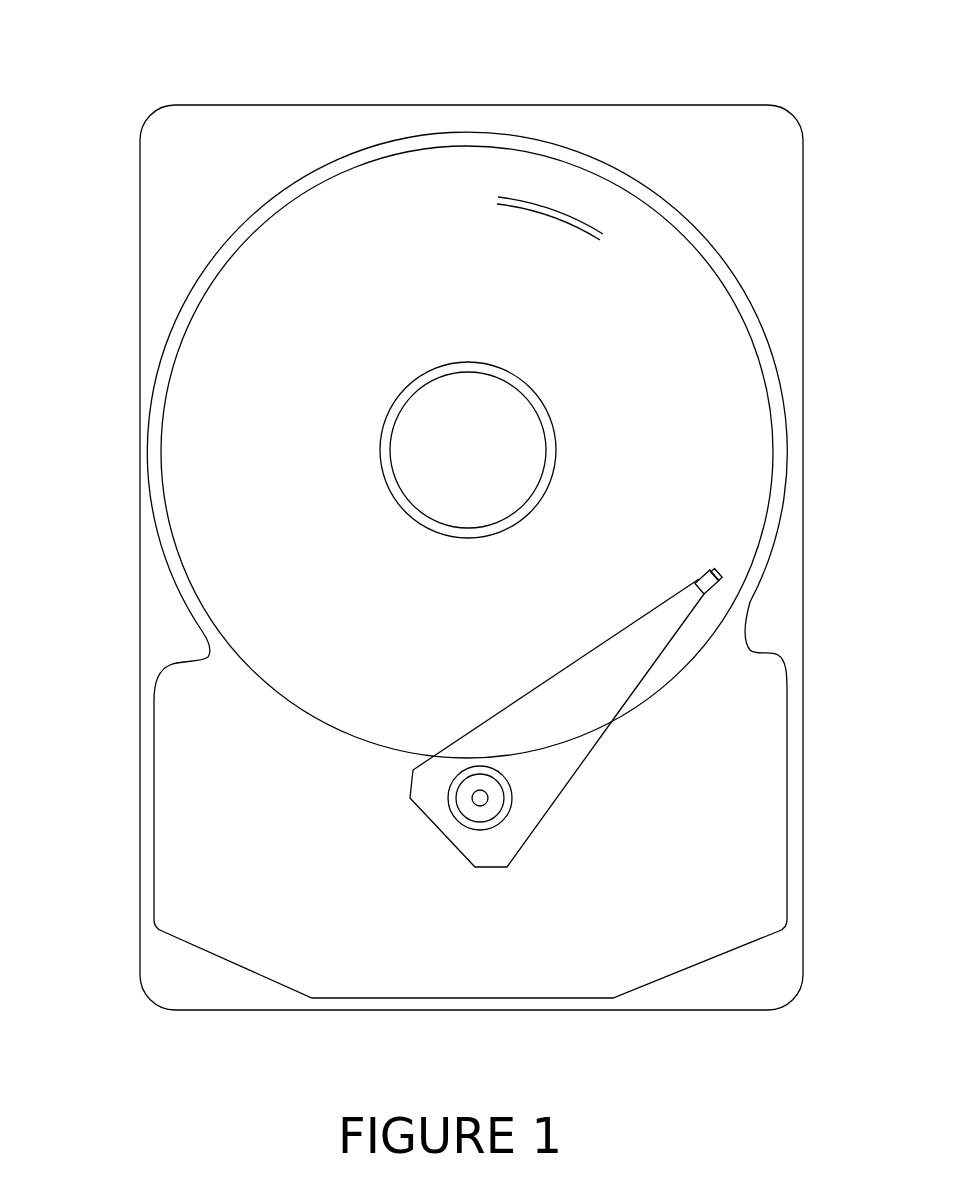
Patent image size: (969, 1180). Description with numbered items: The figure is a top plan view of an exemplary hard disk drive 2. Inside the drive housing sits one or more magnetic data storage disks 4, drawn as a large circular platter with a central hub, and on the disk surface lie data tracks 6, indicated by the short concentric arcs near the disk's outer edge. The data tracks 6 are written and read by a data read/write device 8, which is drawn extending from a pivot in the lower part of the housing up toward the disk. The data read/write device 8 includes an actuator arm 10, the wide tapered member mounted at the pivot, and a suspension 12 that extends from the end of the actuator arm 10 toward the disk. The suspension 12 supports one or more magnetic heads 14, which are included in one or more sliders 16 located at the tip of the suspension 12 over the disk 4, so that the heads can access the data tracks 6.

The hard disk drive 2 is at (480, 508).
The magnetic data storage disk 4 is at (467, 388).
The data track 6 is at (523, 193).
The data read/write device 8 is at (665, 692).
The actuator arm 10 is at (548, 740).
The suspension 12 is at (759, 557).
The magnetic head 14 is at (807, 556).
The slider 16 is at (717, 572).